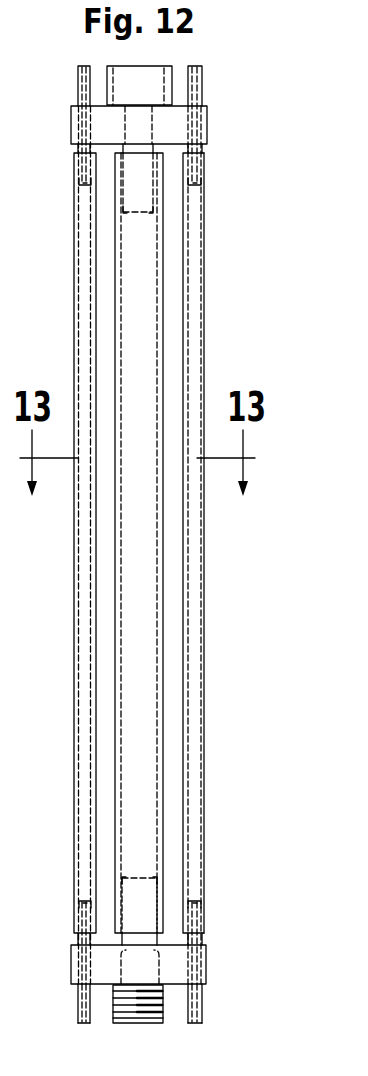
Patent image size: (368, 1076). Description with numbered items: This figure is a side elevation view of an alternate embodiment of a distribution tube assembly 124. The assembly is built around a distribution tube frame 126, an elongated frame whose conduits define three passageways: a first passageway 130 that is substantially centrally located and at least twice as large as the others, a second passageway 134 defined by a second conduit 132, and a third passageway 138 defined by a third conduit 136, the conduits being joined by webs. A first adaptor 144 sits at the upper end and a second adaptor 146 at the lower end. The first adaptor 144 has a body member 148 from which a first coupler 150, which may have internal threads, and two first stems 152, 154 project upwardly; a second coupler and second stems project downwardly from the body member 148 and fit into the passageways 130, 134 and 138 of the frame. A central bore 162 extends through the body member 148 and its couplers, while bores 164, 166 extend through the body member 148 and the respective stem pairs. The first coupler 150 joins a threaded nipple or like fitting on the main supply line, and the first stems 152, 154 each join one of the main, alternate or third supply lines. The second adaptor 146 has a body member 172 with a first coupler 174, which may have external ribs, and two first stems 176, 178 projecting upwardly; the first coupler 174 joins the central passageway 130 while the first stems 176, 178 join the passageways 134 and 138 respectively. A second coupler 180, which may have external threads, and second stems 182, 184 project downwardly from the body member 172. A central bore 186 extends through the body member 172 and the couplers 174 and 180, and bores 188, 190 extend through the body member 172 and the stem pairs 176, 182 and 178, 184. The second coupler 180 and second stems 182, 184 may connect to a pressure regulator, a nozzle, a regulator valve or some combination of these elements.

The distribution tube assembly 124 is at (217, 348).
The distribution tube frame 126 is at (217, 702).
The first passageway 130 is at (156, 559).
The second conduit 132 is at (204, 758).
The second passageway 134 is at (199, 645).
The third conduit 136 is at (74, 672).
The third passageway 138 is at (84, 724).
The first adaptor 144 is at (218, 134).
The second adaptor 146 is at (60, 959).
The body member 148 is at (72, 135).
The first coupler 150 is at (173, 70).
The first stem 152 is at (201, 97).
The first stem 154 is at (77, 85).
The central bore 162 is at (132, 212).
The bore 164 is at (203, 82).
The bore 166 is at (82, 64).
The body member 172 is at (71, 967).
The first coupler 174 is at (163, 888).
The first stem 176 is at (202, 912).
The first stem 178 is at (75, 916).
The second coupler 180 is at (163, 1019).
The second stem 182 is at (203, 994).
The second stem 184 is at (77, 1000).
The central bore 186 is at (137, 875).
The bore 188 is at (195, 1028).
The bore 190 is at (84, 1027).